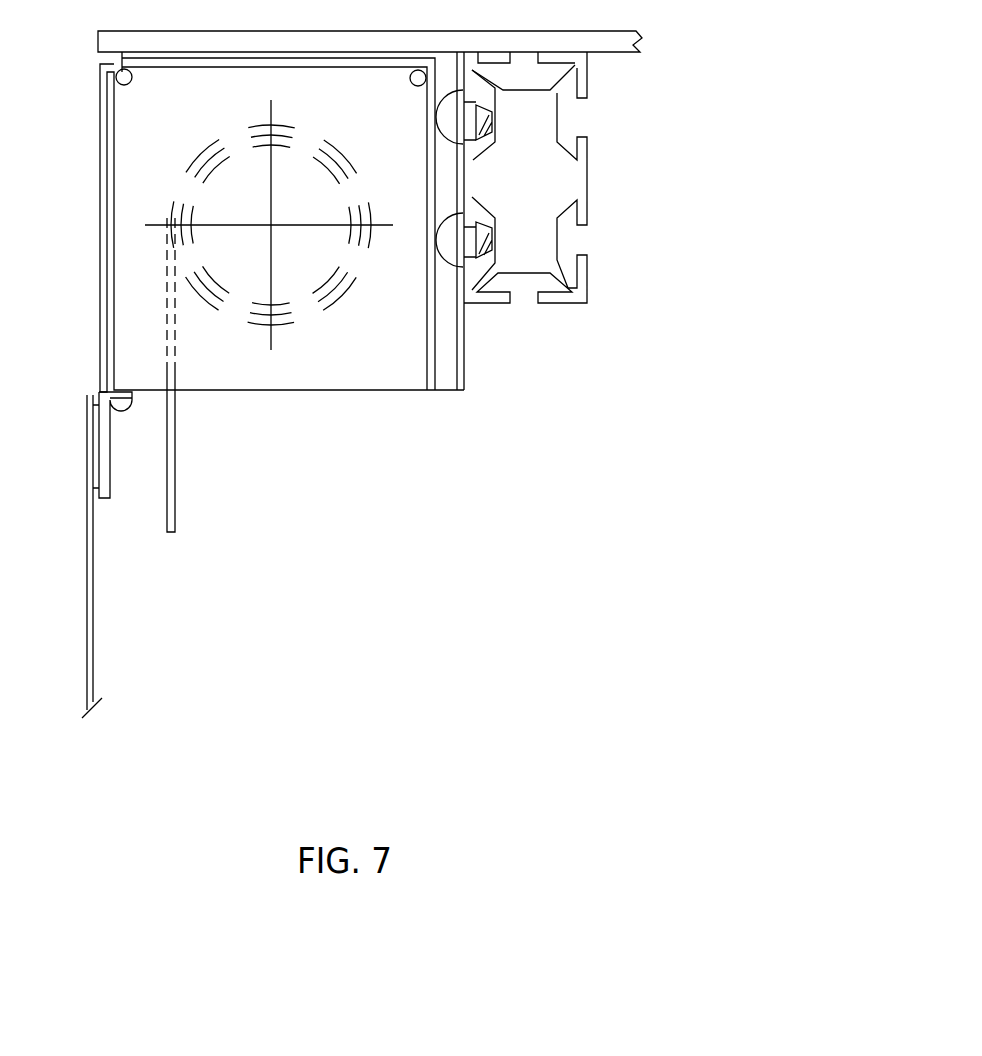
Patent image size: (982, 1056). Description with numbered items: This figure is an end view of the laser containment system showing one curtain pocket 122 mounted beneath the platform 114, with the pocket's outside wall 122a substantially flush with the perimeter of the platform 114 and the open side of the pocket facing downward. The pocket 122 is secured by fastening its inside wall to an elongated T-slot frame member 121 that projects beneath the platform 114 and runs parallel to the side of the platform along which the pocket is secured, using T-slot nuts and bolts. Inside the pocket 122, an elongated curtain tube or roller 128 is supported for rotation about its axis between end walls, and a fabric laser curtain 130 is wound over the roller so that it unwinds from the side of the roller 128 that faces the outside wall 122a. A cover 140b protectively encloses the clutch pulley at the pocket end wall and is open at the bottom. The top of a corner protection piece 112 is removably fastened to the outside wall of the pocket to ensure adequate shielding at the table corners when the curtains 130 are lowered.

The platform 114 is at (533, 43).
The T-slot frame member 121 is at (568, 288).
The curtain pocket 122 is at (360, 395).
The outside wall of pocket 122a is at (98, 277).
The curtain tube or roller 128 is at (180, 188).
The cover 140b is at (269, 372).
The fabric laser curtain 130 is at (176, 480).
The corner protection piece 112 is at (87, 525).